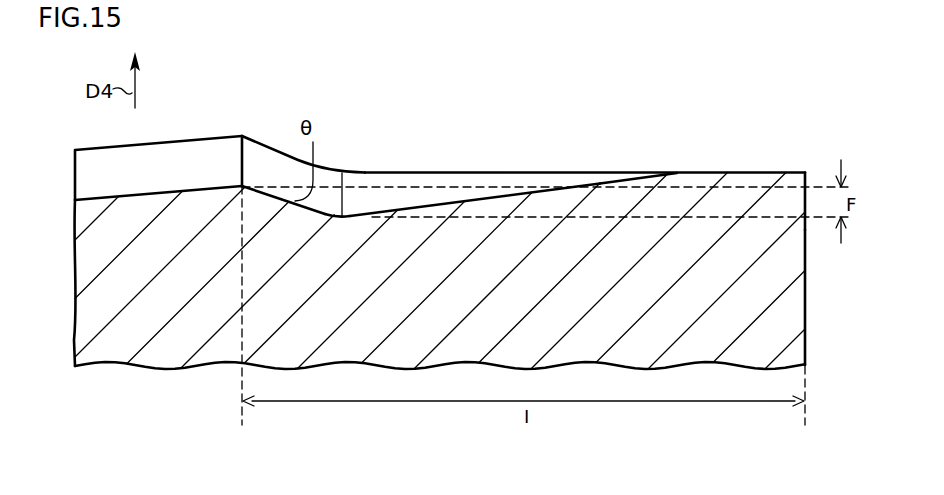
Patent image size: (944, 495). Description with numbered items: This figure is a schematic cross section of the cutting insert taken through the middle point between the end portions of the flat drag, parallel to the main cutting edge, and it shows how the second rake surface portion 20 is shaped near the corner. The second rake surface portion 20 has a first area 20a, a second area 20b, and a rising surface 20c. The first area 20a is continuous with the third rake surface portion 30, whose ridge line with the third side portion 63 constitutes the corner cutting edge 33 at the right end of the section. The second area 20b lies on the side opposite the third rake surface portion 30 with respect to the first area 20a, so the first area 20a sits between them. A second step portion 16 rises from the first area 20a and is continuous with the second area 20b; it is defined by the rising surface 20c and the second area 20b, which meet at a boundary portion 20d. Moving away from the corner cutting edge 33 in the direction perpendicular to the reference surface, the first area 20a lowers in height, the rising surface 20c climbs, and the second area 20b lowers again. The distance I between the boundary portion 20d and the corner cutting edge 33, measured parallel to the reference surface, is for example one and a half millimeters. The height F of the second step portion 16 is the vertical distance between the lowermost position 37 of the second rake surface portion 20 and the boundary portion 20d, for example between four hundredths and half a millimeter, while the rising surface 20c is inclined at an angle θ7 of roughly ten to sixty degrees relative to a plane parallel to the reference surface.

The second rake surface portion 20 is at (413, 50).
The second step portion 16 is at (313, 79).
The first area 20a is at (420, 172).
The second area 20b is at (192, 190).
The rising surface 20c is at (272, 195).
The boundary portion 20d is at (247, 186).
The inclination angle θ 7 is at (330, 166).
The lowermost position 37 is at (348, 216).
The third rake surface portion 30 is at (600, 183).
The corner cutting edge 33 is at (806, 172).
The third side portion 63 is at (805, 300).